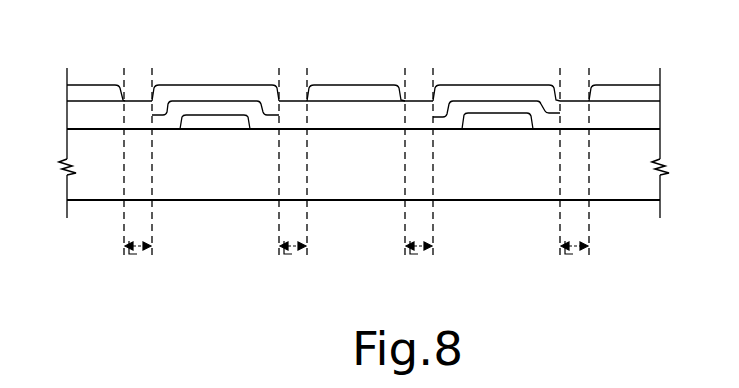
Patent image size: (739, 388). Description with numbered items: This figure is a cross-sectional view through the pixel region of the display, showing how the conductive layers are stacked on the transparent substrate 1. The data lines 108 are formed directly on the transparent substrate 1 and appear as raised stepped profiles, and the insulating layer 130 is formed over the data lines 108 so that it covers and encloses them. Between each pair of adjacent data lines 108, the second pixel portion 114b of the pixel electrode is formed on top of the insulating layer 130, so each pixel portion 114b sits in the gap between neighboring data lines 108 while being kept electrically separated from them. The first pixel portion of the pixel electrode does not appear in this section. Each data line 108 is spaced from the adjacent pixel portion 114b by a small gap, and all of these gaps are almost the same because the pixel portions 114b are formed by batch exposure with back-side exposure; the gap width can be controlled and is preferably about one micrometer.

The transparent substrate 1 is at (363, 164).
The data line 108 is at (225, 113).
The second pixel portion 114b is at (100, 91).
The insulating layer 130 is at (167, 90).